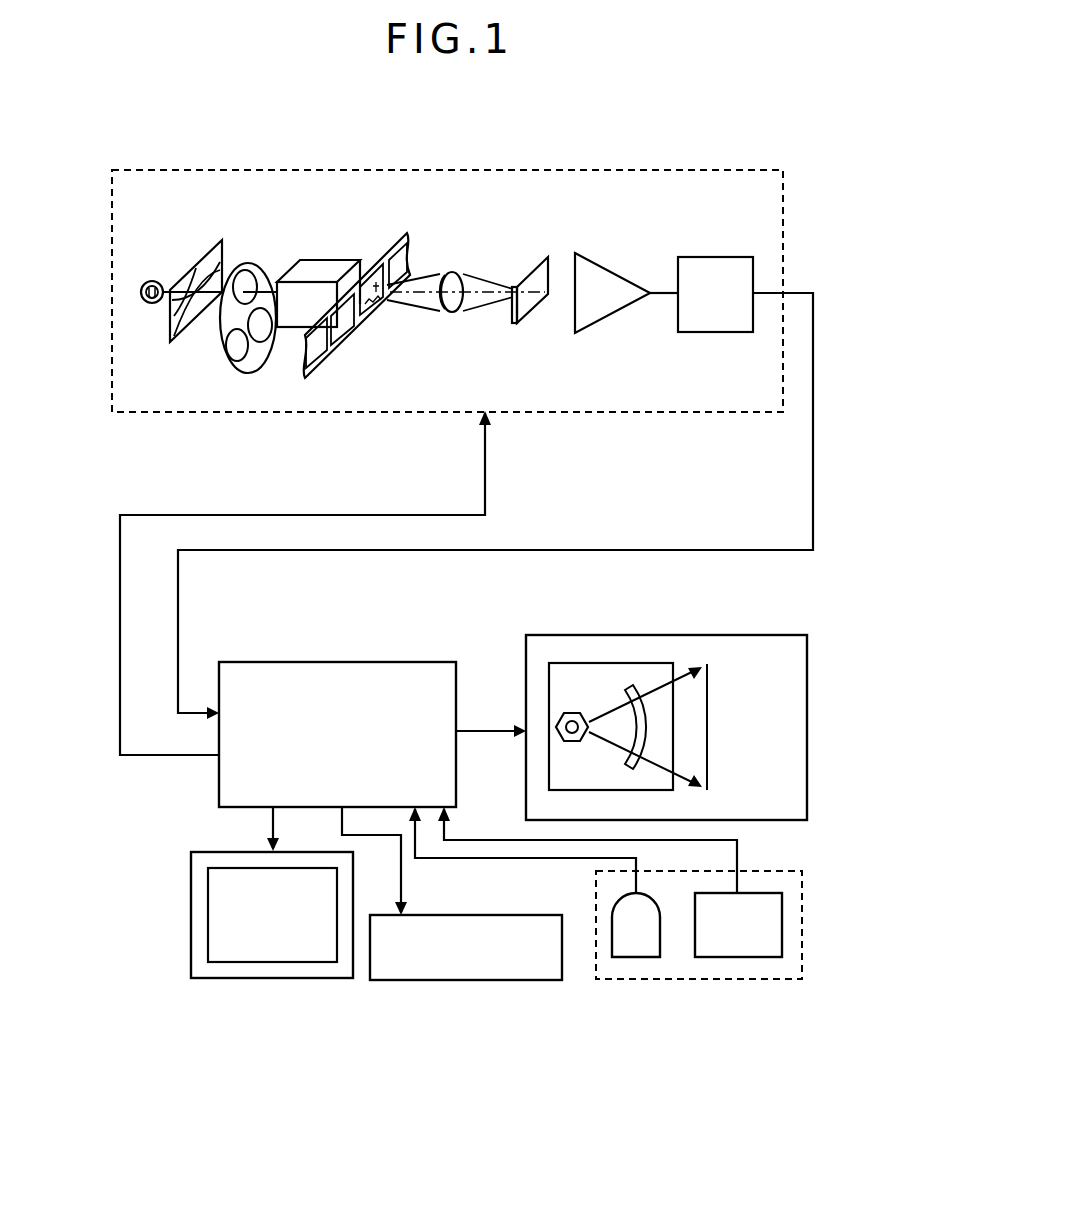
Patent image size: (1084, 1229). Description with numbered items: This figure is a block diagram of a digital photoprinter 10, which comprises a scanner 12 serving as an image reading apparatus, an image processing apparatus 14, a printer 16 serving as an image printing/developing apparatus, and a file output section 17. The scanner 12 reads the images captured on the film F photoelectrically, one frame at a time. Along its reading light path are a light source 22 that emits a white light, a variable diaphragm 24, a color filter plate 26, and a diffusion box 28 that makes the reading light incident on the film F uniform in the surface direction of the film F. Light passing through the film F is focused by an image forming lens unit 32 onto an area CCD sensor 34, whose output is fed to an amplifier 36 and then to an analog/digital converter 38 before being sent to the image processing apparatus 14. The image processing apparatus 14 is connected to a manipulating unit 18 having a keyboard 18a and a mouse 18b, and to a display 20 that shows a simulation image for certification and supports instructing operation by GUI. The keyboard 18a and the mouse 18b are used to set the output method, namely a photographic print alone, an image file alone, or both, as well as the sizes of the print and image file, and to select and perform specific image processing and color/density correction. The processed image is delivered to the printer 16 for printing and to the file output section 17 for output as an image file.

The digital photoprinter 10 is at (725, 155).
The scanner 12 is at (112, 362).
The image processing apparatus 14 is at (336, 660).
The printer 16 is at (662, 634).
The file output section 17 is at (438, 981).
The manipulating unit 18 is at (680, 980).
The keyboard 18a is at (742, 958).
The mouse 18b is at (632, 958).
The display 20 is at (262, 979).
The light source 22 is at (150, 280).
The variable diaphragm 24 is at (197, 262).
The color filter plate 26 is at (244, 264).
The diffusion box 28 is at (313, 275).
The film F is at (385, 258).
The image forming lens unit 32 is at (450, 273).
The area CCD sensor 34 is at (533, 272).
The amplifier 36 is at (617, 312).
The A/D converter 38 is at (716, 333).